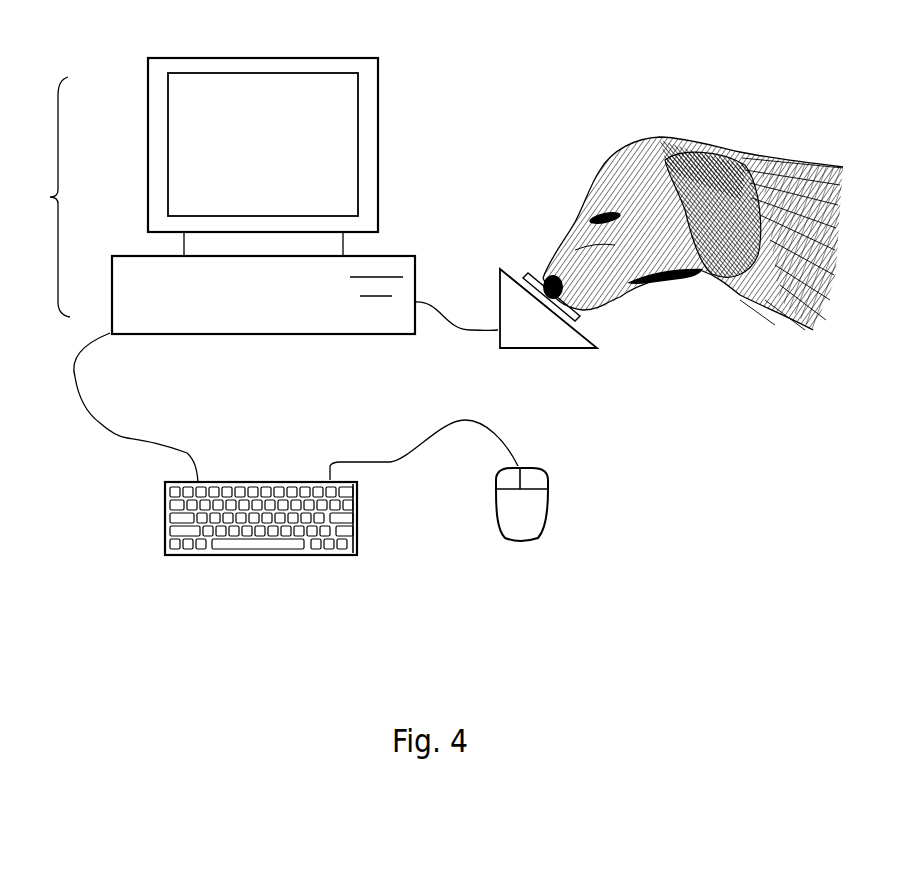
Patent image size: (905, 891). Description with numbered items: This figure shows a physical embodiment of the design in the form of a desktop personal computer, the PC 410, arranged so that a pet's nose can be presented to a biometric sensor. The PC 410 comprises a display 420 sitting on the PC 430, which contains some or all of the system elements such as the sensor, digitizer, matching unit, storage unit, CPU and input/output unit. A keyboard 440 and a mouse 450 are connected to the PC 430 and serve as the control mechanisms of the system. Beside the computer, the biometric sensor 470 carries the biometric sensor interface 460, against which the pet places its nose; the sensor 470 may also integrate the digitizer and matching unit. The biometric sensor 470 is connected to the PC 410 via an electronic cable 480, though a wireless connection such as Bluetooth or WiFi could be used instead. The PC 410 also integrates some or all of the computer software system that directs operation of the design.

The PC 410 is at (43, 197).
The display 420 is at (222, 57).
The PC 430 is at (401, 252).
The keyboard 440 is at (266, 477).
The mouse 450 is at (546, 466).
The biometric sensor interface 460 is at (529, 275).
The biometric sensor 470 is at (497, 287).
The electronic cable 480 is at (465, 336).